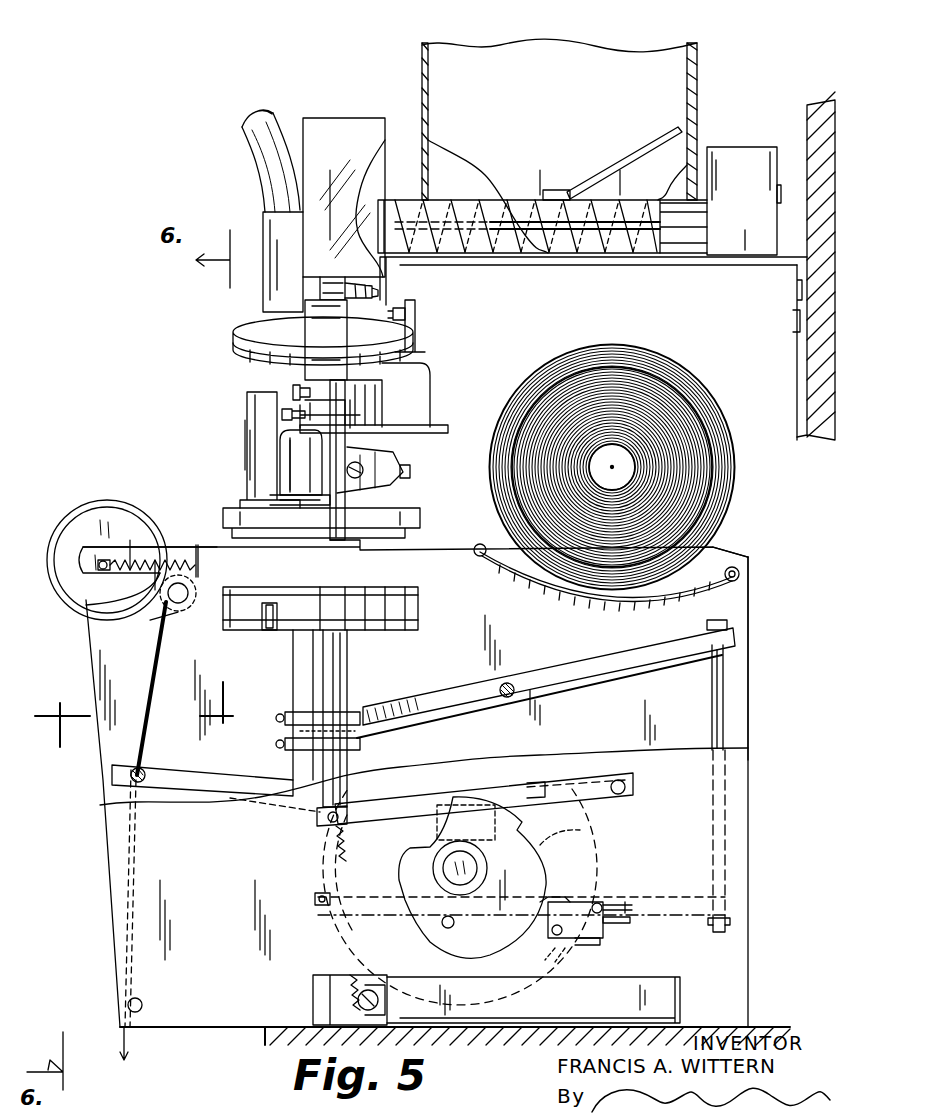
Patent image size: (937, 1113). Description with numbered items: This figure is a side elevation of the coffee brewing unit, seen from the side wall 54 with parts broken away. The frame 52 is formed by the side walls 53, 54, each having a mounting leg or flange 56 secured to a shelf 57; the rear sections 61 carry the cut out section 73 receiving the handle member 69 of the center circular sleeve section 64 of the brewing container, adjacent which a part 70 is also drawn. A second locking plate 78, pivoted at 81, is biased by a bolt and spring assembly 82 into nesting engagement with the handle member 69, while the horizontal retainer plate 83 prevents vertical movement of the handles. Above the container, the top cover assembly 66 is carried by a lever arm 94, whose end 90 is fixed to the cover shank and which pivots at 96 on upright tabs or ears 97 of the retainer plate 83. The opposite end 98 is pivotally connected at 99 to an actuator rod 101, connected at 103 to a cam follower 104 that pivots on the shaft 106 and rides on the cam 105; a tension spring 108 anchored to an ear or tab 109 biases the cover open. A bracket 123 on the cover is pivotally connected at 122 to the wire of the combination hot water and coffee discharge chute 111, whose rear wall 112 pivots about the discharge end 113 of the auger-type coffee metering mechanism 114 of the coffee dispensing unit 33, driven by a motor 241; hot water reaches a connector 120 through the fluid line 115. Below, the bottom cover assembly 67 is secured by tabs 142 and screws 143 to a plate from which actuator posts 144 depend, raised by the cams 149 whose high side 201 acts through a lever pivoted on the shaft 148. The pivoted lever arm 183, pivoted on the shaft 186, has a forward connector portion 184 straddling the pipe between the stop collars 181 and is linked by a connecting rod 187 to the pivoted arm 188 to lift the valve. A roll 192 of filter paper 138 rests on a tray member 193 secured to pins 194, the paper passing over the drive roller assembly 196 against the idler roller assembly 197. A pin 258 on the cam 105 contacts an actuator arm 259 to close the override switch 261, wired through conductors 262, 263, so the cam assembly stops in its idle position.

The coffee dispensing unit 33 is at (687, 100).
The coffee metering mechanism 114 is at (503, 186).
The motor 241 is at (738, 150).
The discharge end 113 is at (398, 258).
The combination hot water and coffee discharge chute 111 is at (335, 118).
The rear wall 112 is at (383, 185).
The connector 120 is at (270, 245).
The fluid line 115 is at (270, 125).
The top cover assembly 66 is at (399, 305).
The end of lever arm 90 is at (300, 310).
The lever arm 94 is at (310, 345).
The bracket 123 is at (418, 336).
The pivotal connection 122 is at (415, 317).
The end of lever arm 98 is at (425, 370).
The horizontal retainer plate 83 is at (440, 427).
The pivotal connection 99 is at (292, 390).
The pivot 96 is at (282, 414).
The upright tabs or ears 97 is at (290, 427).
The center circular sleeve section 64 is at (258, 446).
The cylinder 70 is at (322, 457).
The handle member 69 is at (300, 490).
The bolt and spring assembly 82 is at (392, 480).
The second locking plate 78 is at (363, 466).
The pivotal mounting 81 is at (412, 471).
The cut out section 73 is at (340, 500).
The actuator rod 101 is at (343, 555).
The rear sections 61 is at (425, 503).
The roll of filter paper 192 is at (693, 358).
The plate or tray member 193 is at (535, 590).
The pins 194 is at (483, 560).
The frame 52 is at (769, 630).
The side wall 53 is at (738, 688).
The connecting rod 187 is at (723, 705).
The drive roller assembly 196 is at (79, 512).
The idler or follower roller assembly 197 is at (180, 612).
The bottom cover assembly 67 is at (404, 645).
The screws 143 is at (262, 618).
The tabs 142 is at (270, 630).
The actuator posts 144 is at (348, 680).
The stop collars 181 is at (292, 714).
The forward connector portion 184 is at (283, 742).
The pivoted lever arm 183 is at (590, 670).
The shaft 186 is at (514, 688).
The shaft 148 is at (152, 770).
The pivoted arm 188 is at (200, 790).
The filter paper 138 is at (410, 548).
The cam follower 104 is at (493, 795).
The shaft 106 is at (625, 793).
The pivotal connection 103 is at (318, 822).
The tension spring 108 is at (347, 858).
The cam 105 is at (497, 930).
The cams 149 is at (605, 858).
The actuator arm 259 is at (563, 844).
The override switch 261 is at (605, 932).
The conductor 262 is at (628, 905).
The conductor 263 is at (632, 920).
The high side 201 is at (590, 947).
The mounting leg or flange 56 is at (658, 980).
The ear or tab 109 is at (375, 990).
The pin 258 is at (442, 925).
The shelf 57 is at (772, 1015).
The side wall 54 is at (448, 438).